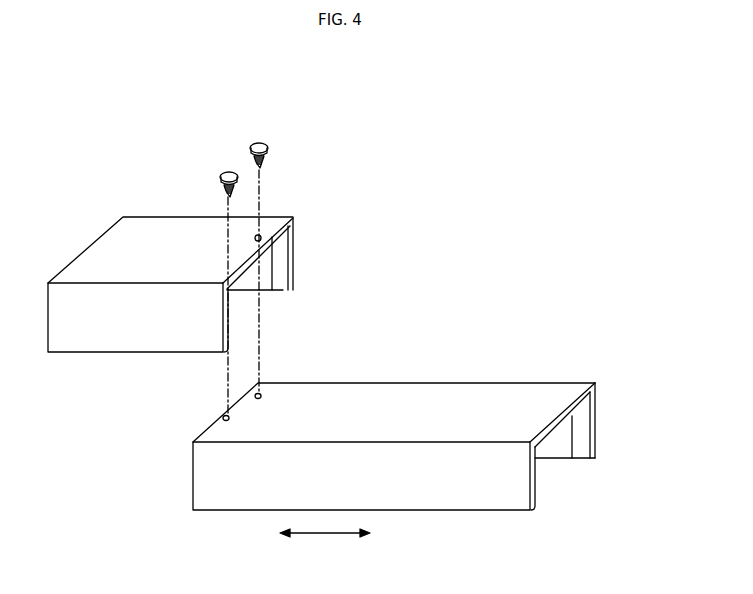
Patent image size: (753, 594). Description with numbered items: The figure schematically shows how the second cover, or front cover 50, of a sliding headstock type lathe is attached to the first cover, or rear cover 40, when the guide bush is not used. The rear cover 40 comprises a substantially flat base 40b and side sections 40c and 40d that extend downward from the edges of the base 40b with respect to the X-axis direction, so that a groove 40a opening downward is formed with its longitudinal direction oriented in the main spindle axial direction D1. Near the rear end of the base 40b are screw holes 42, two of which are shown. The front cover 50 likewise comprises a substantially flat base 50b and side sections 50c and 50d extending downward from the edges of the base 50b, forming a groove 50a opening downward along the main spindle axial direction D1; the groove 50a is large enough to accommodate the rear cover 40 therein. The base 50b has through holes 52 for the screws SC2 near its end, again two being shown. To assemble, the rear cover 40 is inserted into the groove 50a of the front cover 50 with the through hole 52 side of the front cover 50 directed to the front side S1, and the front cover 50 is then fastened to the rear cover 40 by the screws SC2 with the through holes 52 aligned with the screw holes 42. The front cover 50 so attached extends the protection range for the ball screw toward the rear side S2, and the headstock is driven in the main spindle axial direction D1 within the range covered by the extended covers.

The first cover 40 is at (388, 458).
The groove 40a is at (572, 460).
The base 40b is at (488, 398).
The side section 40c is at (450, 495).
The side section 40d is at (576, 460).
The screw hole 42 is at (222, 417).
The second cover 50 is at (195, 286).
The groove 50a is at (273, 297).
The base 50b is at (113, 247).
The side section 50c is at (293, 272).
The side section 50d is at (80, 335).
The through hole 52 is at (226, 266).
The screw SC2 is at (225, 170).
The main spindle axial direction D1 is at (325, 547).
The front side S1 is at (392, 533).
The rear side S2 is at (252, 533).